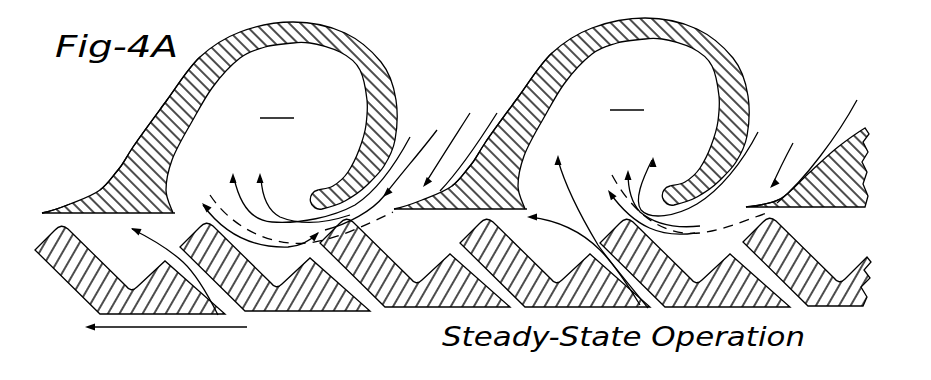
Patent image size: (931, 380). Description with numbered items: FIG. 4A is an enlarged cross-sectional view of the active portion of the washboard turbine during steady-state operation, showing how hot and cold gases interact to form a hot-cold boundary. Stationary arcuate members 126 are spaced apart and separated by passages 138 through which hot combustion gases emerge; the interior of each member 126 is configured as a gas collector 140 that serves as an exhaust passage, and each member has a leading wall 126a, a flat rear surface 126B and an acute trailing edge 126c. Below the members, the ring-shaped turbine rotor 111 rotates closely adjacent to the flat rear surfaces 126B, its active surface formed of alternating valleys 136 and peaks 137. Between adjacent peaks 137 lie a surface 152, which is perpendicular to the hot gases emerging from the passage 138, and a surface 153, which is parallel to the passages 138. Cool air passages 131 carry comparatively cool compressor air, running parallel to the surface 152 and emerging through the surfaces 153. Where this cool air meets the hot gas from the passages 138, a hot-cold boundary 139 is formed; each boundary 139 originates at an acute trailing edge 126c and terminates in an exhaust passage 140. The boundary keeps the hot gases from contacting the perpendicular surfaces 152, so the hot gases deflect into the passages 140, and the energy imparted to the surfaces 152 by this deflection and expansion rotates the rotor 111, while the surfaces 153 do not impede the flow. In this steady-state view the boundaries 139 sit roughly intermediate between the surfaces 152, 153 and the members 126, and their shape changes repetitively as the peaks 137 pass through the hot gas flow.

The turbine rotor 111 is at (86, 286).
The arcuate member 126 is at (343, 37).
The vane leading wall 126a is at (175, 88).
The flat rear surface 126B is at (88, 214).
The acute trailing edge 126c is at (42, 213).
The cool air passage 131 is at (453, 277).
The valley 136 is at (838, 284).
The peak 137 is at (771, 213).
The passage 138 is at (455, 148).
The hot-cold boundary 139 is at (208, 193).
The gas collector 140 is at (452, 104).
The surface 152 is at (242, 258).
The surface 153 is at (434, 262).